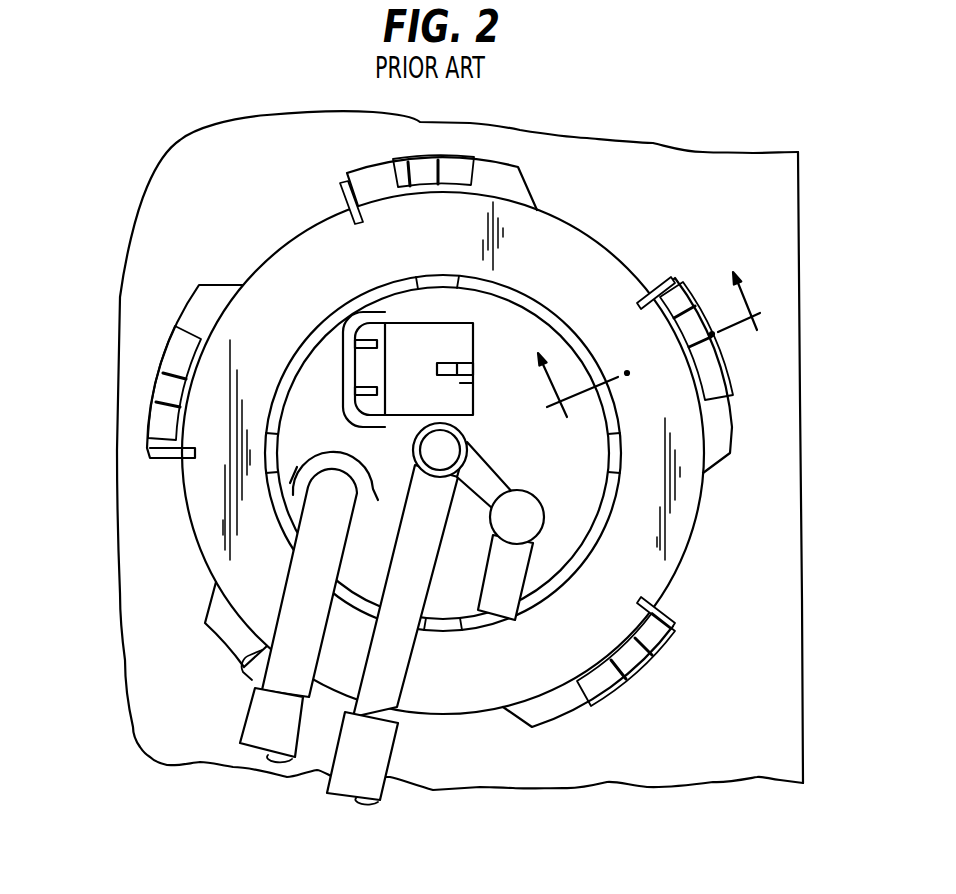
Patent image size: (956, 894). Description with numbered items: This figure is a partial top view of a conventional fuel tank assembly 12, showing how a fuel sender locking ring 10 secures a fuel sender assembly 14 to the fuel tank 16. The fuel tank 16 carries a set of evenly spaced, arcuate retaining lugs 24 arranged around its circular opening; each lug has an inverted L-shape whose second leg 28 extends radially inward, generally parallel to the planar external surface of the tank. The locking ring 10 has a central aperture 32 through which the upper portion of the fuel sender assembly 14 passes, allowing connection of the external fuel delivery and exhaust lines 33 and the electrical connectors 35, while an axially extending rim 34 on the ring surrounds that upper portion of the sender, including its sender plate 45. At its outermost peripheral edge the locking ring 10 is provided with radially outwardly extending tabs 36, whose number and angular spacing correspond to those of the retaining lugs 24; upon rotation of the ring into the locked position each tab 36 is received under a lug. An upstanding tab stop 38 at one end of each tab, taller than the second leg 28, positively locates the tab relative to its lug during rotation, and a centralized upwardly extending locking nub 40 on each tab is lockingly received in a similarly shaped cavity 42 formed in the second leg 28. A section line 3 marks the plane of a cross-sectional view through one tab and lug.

The section line 3- 3 is at (640, 343).
The fuel sender locking ring 10 is at (591, 240).
The fuel tank assembly 12 is at (672, 141).
The fuel sender assembly 14 is at (470, 442).
The fuel tank 16 is at (790, 537).
The retaining lugs 24 is at (686, 288).
The second leg 28 is at (459, 160).
The central aperture 32 is at (527, 326).
The fuel delivery and exhaust lines 33 is at (402, 656).
The axially extending rim 34 is at (598, 541).
The electrical connectors 35 is at (468, 382).
The tabs 36 is at (516, 180).
The tab stop 38 is at (348, 202).
The locking nub 40 is at (613, 643).
The cavity 42 is at (628, 672).
The sender plate 45 is at (564, 499).